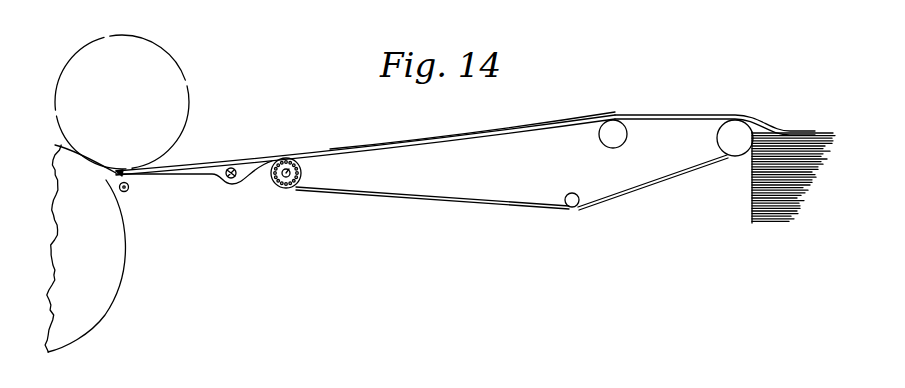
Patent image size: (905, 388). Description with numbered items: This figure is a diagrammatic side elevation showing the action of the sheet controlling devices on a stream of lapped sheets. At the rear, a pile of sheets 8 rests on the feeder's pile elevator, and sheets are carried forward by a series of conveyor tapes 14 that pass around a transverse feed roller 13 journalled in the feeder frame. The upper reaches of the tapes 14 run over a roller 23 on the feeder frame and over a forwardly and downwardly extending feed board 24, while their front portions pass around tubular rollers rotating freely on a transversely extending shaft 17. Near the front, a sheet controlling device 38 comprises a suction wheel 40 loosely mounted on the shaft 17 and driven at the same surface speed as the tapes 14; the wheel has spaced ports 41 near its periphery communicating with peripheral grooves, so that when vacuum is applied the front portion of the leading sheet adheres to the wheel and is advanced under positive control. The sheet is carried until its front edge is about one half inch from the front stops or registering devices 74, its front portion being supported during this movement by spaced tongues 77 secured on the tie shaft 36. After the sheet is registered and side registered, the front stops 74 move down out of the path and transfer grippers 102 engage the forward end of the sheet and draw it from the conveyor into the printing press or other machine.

The transfer grippers 102 is at (183, 127).
The front stops or registering devices 74 is at (118, 187).
The tongues 77 is at (203, 148).
The suction wheel 40 is at (194, 176).
The tie shaft 36 is at (230, 179).
The sheet controlling device 38 is at (274, 186).
The ports 41 is at (290, 185).
The shaft 17 is at (300, 174).
The conveyor tapes 14 is at (463, 202).
The feed board 24 is at (571, 195).
The roller 23 is at (608, 141).
The feed roller 13 is at (736, 126).
The pile of sheets 8 is at (752, 183).